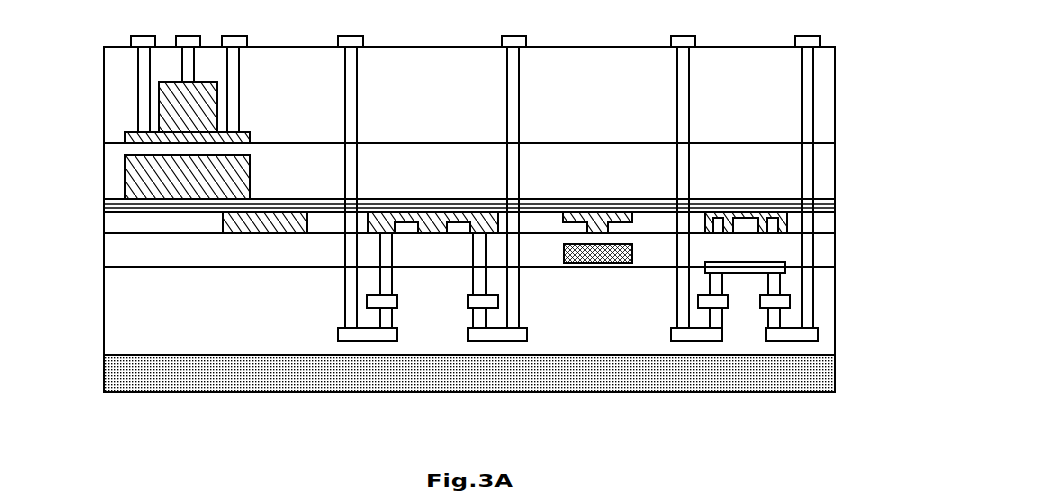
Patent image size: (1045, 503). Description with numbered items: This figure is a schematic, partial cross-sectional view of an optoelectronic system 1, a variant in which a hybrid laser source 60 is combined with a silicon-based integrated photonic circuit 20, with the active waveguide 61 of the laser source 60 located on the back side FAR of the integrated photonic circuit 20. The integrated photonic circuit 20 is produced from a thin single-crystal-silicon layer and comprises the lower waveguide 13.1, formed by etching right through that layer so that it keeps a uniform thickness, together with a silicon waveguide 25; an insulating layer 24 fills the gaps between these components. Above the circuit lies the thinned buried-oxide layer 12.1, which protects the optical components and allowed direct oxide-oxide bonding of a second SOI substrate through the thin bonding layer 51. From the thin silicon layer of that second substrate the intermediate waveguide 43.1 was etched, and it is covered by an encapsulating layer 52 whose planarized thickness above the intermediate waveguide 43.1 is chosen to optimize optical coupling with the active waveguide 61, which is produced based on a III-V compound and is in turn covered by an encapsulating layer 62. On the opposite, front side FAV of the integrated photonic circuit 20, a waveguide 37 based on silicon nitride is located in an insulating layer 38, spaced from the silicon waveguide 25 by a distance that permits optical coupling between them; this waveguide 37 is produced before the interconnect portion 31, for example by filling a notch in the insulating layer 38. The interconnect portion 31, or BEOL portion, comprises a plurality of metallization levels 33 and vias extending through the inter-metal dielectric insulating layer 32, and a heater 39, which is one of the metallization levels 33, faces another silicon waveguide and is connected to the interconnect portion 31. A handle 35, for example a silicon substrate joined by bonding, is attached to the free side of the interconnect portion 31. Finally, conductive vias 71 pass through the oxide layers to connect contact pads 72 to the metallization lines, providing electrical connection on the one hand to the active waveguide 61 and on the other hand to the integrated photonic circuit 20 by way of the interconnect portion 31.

The optoelectronic system 1 is at (72, 67).
The laser source 60 is at (96, 112).
The active waveguide 61 is at (218, 107).
The encapsulating layer 62 is at (837, 95).
The encapsulating layer 52 is at (837, 168).
The thin bonding layer 51 is at (837, 203).
The integrated photonic circuit 20 is at (96, 218).
The insulating layer 24 is at (837, 223).
The insulating layer 38 is at (837, 250).
The interconnect portion 31 is at (96, 292).
The insulating layer 32 is at (837, 310).
The handle 35 is at (837, 373).
The contact pads 72 is at (670, 42).
The conductive vias 71 is at (673, 97).
The intermediate waveguide 43.1 is at (123, 177).
The lower waveguide 13.1 is at (287, 207).
The back side FAR is at (457, 208).
The front side FAV is at (455, 236).
The silicon waveguide 25 is at (598, 208).
The thinned buried-oxide layer 12.1 is at (837, 210).
The waveguide 37 is at (598, 263).
The heater 39 is at (703, 268).
The metallization levels 33 is at (698, 300).